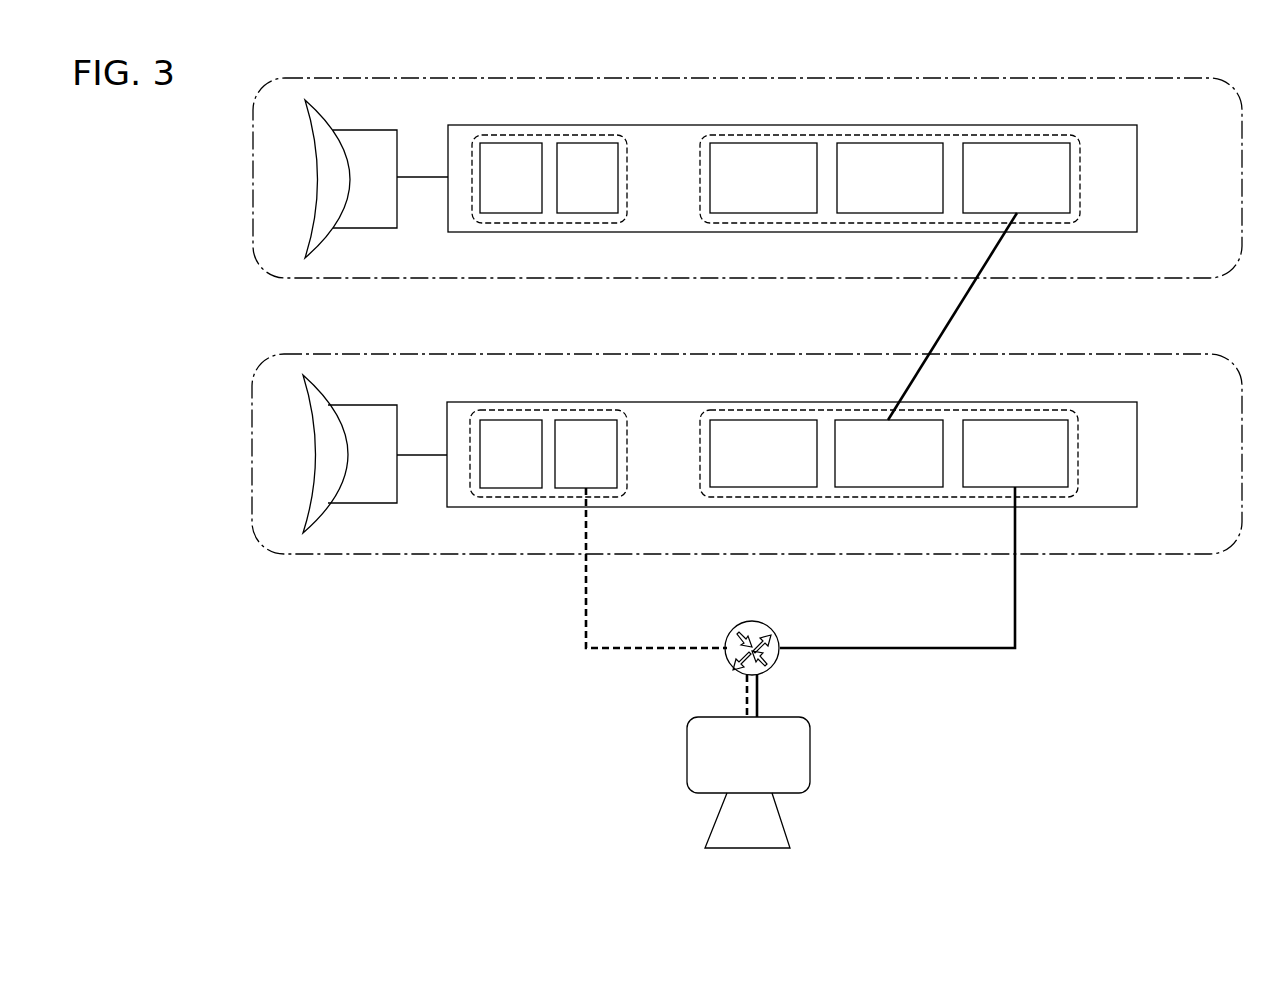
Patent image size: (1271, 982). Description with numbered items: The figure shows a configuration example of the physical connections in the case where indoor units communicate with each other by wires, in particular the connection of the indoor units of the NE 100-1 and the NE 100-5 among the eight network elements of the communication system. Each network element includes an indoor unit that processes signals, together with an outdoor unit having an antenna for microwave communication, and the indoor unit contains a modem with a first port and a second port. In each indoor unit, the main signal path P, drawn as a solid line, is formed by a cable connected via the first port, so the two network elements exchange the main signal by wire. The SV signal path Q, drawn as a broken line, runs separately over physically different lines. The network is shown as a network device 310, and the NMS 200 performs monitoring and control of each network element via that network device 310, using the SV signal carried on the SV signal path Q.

The NE 100-5 is at (252, 168).
The NE 100-1 is at (252, 443).
The network device 310 is at (751, 621).
The NMS 200 is at (811, 757).
The main signal path P is at (958, 310).
The SV signal path Q is at (586, 593).